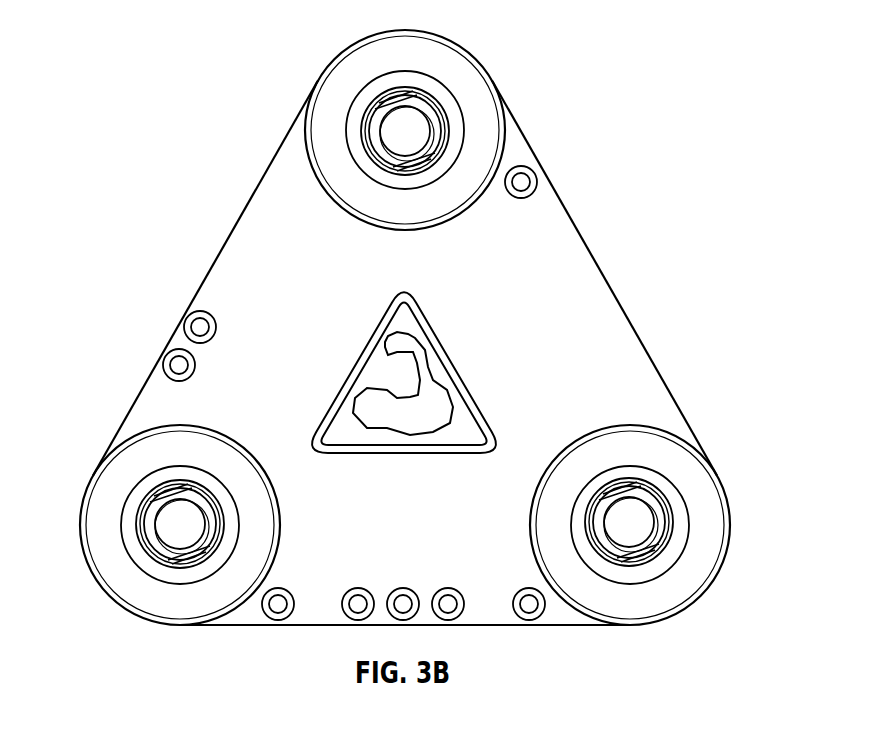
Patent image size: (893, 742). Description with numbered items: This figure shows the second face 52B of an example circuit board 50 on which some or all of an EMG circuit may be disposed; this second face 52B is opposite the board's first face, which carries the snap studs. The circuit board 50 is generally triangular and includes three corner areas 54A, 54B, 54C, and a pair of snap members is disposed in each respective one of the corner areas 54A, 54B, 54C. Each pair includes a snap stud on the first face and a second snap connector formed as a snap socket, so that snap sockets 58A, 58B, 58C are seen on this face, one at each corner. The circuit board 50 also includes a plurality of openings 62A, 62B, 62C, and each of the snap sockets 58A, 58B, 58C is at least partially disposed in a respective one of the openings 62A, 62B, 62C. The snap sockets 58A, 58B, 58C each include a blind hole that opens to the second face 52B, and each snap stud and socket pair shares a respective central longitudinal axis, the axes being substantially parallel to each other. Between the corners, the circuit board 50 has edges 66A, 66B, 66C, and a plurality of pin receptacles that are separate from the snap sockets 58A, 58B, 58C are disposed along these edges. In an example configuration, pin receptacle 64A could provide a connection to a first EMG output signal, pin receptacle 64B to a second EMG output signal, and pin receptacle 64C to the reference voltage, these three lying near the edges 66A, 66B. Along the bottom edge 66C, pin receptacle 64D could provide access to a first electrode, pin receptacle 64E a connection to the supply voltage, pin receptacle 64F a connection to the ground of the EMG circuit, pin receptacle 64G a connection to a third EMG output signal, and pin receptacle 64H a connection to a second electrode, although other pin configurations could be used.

The circuit board 50 is at (104, 107).
The second face 52B is at (140, 415).
The corner area 54A is at (409, 115).
The corner area 54B is at (664, 547).
The corner area 54C is at (153, 547).
The snap socket 58A is at (428, 118).
The snap socket 58B is at (655, 510).
The snap socket 58C is at (153, 545).
The opening 62A is at (393, 138).
The opening 62B is at (630, 530).
The opening 62C is at (183, 543).
The pin receptacle 64A is at (166, 358).
The pin receptacle 64B is at (186, 320).
The pin receptacle 64C is at (537, 176).
The pin receptacle 64D is at (282, 588).
The pin receptacle 64E is at (359, 588).
The pin receptacle 64F is at (403, 588).
The pin receptacle 64G is at (449, 588).
The pin receptacle 64H is at (530, 621).
The edge 66A is at (231, 222).
The edge 66B is at (579, 225).
The edge 66C is at (292, 630).